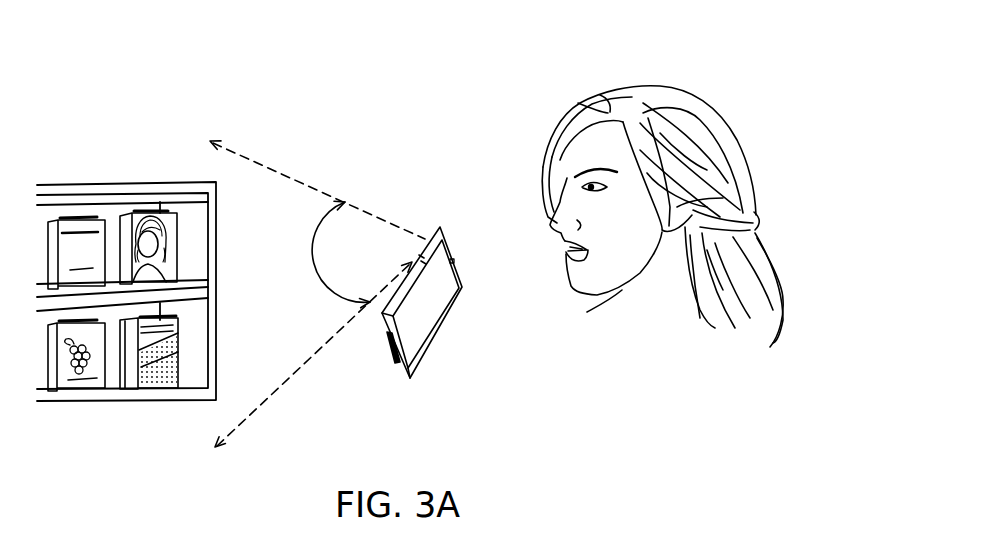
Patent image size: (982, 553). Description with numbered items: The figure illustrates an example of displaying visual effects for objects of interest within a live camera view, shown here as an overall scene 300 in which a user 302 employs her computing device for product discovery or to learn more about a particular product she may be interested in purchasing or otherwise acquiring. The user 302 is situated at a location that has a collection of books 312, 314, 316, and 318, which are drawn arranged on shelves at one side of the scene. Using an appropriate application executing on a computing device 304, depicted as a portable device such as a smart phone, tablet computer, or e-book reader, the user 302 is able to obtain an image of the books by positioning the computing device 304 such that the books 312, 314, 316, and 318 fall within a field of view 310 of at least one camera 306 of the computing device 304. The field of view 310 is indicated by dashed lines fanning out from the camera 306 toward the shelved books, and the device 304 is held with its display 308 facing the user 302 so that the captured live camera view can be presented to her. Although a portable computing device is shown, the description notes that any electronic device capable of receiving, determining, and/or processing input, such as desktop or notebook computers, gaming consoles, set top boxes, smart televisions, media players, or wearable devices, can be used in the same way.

The environment 300 is at (734, 88).
The user 302 is at (530, 147).
The computing device 304 is at (398, 374).
The camera 306 is at (452, 262).
The display screen 308 is at (450, 287).
The field of view 310 is at (317, 294).
The book 312 is at (64, 218).
The book 314 is at (138, 212).
The book 316 is at (82, 390).
The book 318 is at (158, 390).